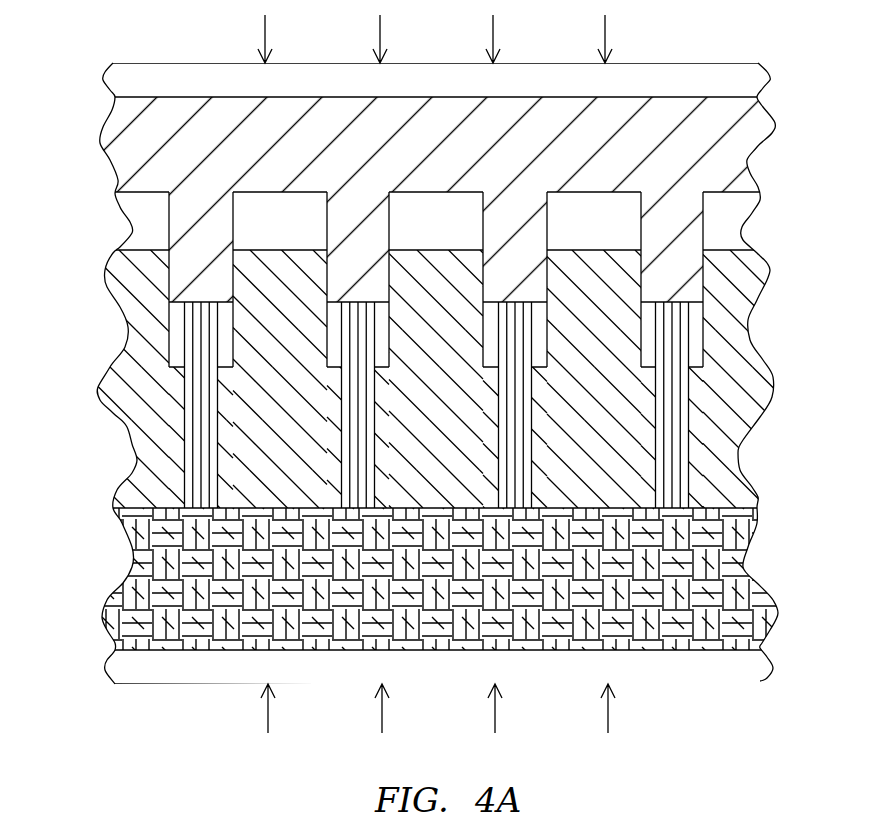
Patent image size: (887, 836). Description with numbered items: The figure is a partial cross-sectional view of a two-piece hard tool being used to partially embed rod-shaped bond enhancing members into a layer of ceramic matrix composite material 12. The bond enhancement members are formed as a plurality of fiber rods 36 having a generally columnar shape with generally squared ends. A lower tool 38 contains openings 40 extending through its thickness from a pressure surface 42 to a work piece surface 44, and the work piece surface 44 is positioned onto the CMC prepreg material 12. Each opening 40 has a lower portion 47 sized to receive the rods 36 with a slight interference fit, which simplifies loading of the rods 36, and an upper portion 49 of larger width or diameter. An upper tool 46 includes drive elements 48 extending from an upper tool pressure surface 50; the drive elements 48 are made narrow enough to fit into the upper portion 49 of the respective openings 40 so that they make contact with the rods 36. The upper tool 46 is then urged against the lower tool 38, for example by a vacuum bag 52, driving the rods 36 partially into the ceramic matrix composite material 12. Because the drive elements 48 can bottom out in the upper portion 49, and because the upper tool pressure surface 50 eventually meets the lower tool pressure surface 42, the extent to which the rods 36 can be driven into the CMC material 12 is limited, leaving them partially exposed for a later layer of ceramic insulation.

The ceramic matrix composite material 12 is at (760, 587).
The fiber rods 36 is at (688, 328).
The lower tool 38 is at (742, 467).
The openings 40 is at (773, 380).
The pressure surface 42 is at (593, 250).
The work piece surface 44 is at (743, 503).
The upper tool 46 is at (775, 126).
The lower portion 47 is at (431, 451).
The drive elements 48 is at (363, 258).
The upper portion 49 is at (424, 319).
The upper tool pressure surface 50 is at (287, 192).
The vacuum bag 52 is at (766, 78).